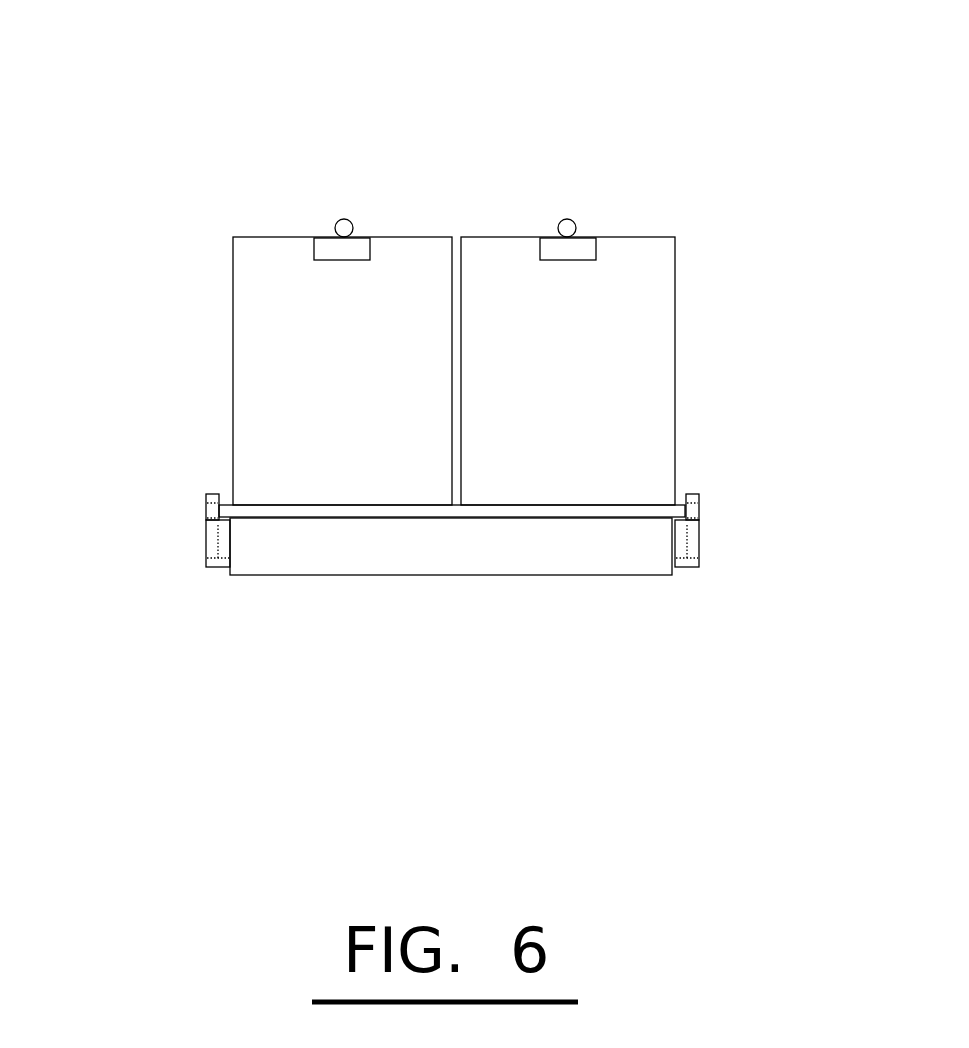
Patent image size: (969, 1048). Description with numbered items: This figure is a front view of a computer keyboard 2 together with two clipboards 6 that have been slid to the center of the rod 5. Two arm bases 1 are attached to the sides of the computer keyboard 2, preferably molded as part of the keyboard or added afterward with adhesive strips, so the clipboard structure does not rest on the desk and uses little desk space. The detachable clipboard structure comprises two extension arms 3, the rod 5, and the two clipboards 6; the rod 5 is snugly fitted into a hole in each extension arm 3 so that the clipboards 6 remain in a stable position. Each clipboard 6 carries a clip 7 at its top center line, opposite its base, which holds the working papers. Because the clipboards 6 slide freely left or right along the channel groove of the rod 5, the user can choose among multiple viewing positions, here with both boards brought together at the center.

The arm base 1 is at (220, 567).
The computer keyboard 2 is at (434, 585).
The extension arm 3 is at (208, 541).
The rod 5 is at (580, 512).
The clipboard 6 is at (260, 262).
The clip 7 is at (343, 204).